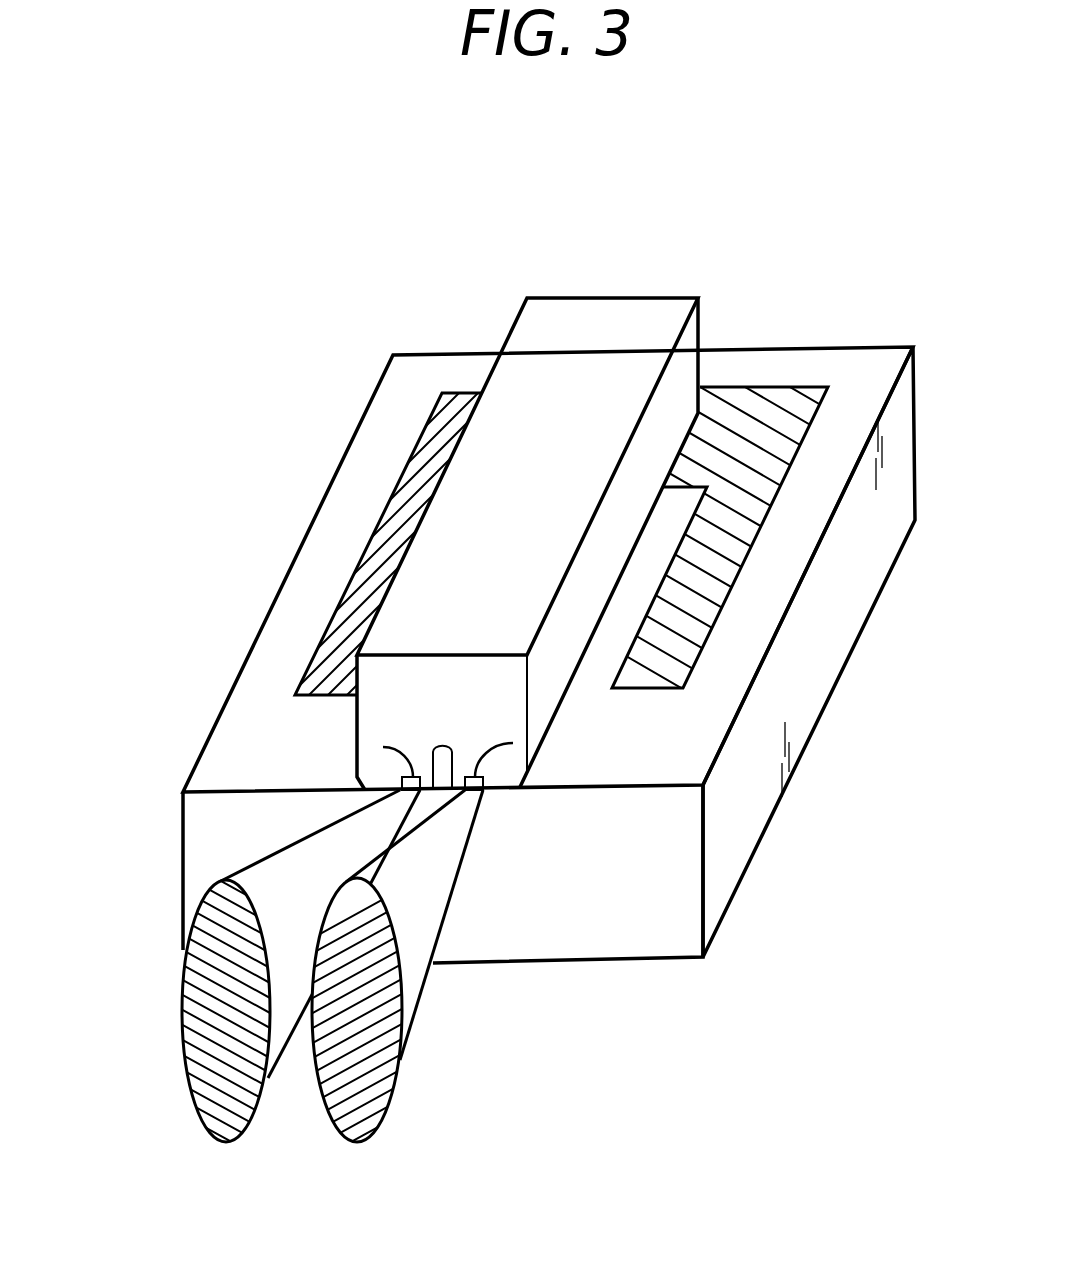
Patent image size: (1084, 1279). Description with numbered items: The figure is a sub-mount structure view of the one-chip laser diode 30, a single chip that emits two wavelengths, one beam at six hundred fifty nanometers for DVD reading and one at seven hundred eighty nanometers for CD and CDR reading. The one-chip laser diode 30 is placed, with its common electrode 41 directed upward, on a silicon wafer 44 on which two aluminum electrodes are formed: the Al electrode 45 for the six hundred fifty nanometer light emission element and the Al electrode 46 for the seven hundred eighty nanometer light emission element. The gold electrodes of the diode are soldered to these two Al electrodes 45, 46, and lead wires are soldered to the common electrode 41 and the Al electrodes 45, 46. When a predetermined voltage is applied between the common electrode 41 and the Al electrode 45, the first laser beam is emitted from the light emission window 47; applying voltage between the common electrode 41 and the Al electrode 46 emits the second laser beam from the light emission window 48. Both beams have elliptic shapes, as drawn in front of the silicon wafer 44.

The one-chip laser diode 30 is at (730, 267).
The common electrode 41 is at (634, 297).
The silicon wafer 44 is at (742, 850).
The Al electrode 45 is at (428, 440).
The Al electrode 46 is at (800, 390).
The light emission window 47 is at (383, 747).
The light emission window 48 is at (513, 743).